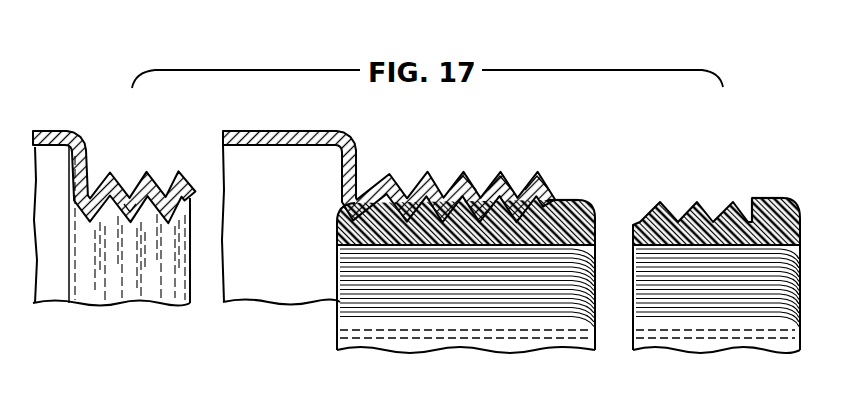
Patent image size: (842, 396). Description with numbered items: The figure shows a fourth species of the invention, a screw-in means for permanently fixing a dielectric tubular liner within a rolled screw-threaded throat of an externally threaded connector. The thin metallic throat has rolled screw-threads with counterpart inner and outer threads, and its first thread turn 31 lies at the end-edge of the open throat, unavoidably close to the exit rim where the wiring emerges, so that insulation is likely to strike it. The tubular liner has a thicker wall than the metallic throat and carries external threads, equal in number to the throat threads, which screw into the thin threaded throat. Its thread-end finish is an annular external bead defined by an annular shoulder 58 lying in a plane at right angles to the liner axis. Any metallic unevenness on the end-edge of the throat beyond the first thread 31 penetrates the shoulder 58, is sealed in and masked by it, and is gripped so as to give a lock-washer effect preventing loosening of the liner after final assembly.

The first thread turn 31 is at (535, 183).
The annular shoulder 58 is at (746, 203).